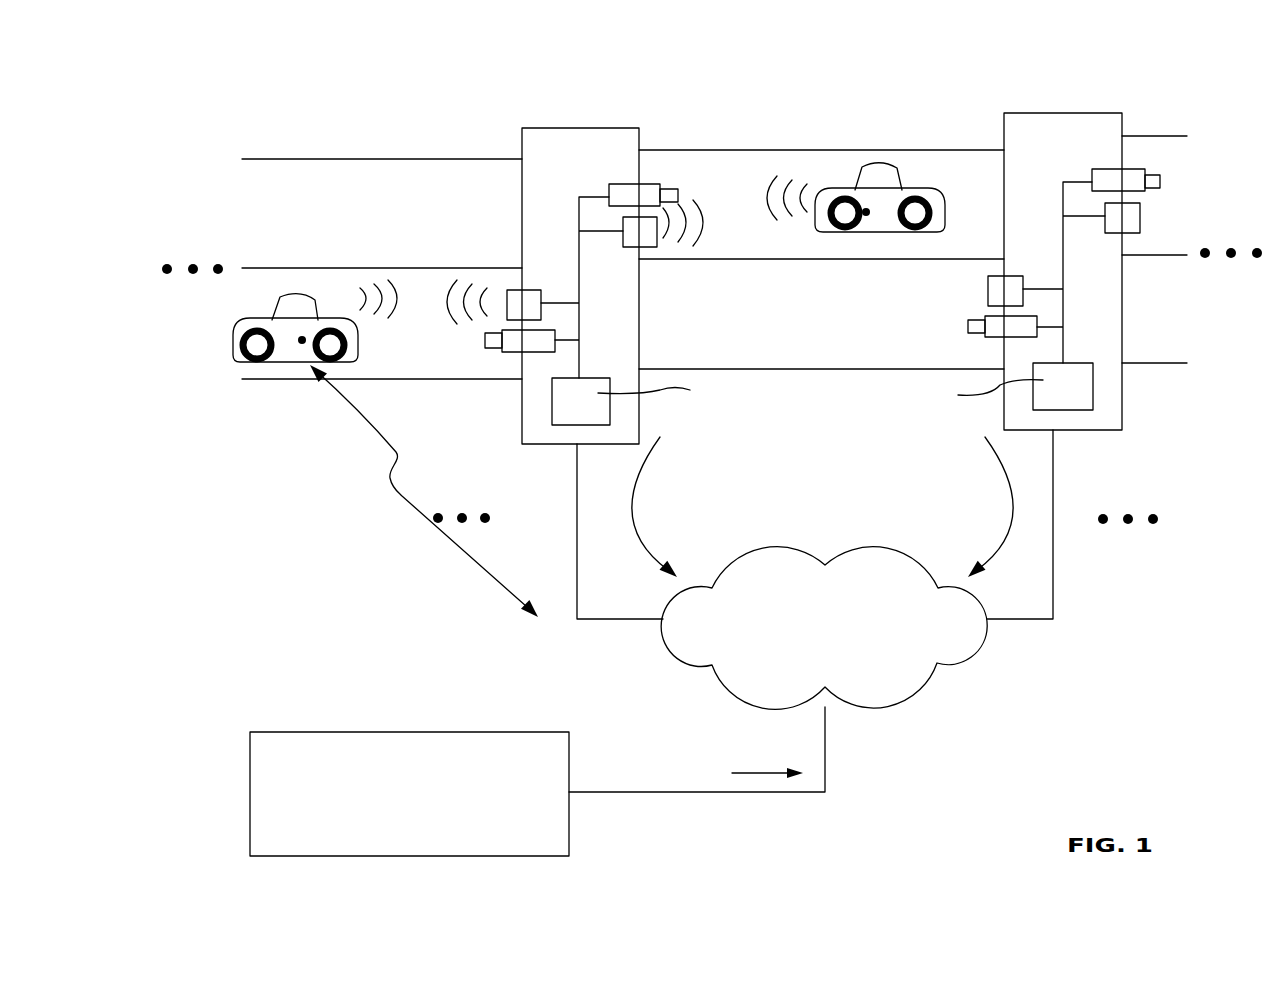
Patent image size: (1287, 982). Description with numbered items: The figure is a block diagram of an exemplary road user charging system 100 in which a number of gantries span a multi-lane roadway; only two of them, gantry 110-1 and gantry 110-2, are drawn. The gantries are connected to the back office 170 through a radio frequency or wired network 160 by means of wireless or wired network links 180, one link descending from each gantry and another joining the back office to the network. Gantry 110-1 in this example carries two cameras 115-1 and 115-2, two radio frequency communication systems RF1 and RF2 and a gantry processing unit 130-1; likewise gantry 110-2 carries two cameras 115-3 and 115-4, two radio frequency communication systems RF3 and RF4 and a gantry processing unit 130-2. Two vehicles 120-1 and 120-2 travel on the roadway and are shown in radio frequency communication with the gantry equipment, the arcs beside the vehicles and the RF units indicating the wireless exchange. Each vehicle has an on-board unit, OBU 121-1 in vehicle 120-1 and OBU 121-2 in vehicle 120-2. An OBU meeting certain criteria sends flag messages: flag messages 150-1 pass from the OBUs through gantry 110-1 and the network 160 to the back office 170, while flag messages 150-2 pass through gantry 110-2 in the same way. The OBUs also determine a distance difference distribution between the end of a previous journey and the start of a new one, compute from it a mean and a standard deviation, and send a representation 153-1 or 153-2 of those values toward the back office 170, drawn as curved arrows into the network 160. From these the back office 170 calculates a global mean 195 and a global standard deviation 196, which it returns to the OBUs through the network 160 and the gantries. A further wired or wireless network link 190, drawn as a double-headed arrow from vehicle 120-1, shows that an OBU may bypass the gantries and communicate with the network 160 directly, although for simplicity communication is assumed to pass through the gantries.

The road user charging system 100 is at (257, 72).
The gantry 110-1 is at (522, 144).
The gantry 110-2 is at (1030, 113).
The camera 115-1 is at (515, 352).
The camera 115-2 is at (646, 184).
The camera 115-3 is at (1020, 337).
The camera 115-4 is at (1133, 169).
The vehicle 120-1 is at (247, 325).
The vehicle 120-2 is at (925, 190).
The OBU 121-1 is at (306, 358).
The OBU 121-2 is at (867, 233).
The gantry processing unit 130-1 is at (552, 393).
The gantry processing unit 130-2 is at (1093, 393).
The flag messages 150-1 is at (717, 380).
The flag messages 150-2 is at (937, 380).
The representation of mean and standard deviation 153-1 is at (727, 470).
The representation of mean and standard deviation 153-2 is at (927, 470).
The network 160 is at (853, 655).
The back office 170 is at (425, 822).
The network link 180 is at (577, 538).
The network link 190 is at (395, 491).
The global mean 195 is at (672, 754).
The global standard deviation 196 is at (714, 754).
The radio frequency communication system RF1 is at (521, 290).
The radio frequency communication system RF2 is at (649, 247).
The radio frequency communication system RF3 is at (993, 276).
The radio frequency communication system RF4 is at (1140, 222).